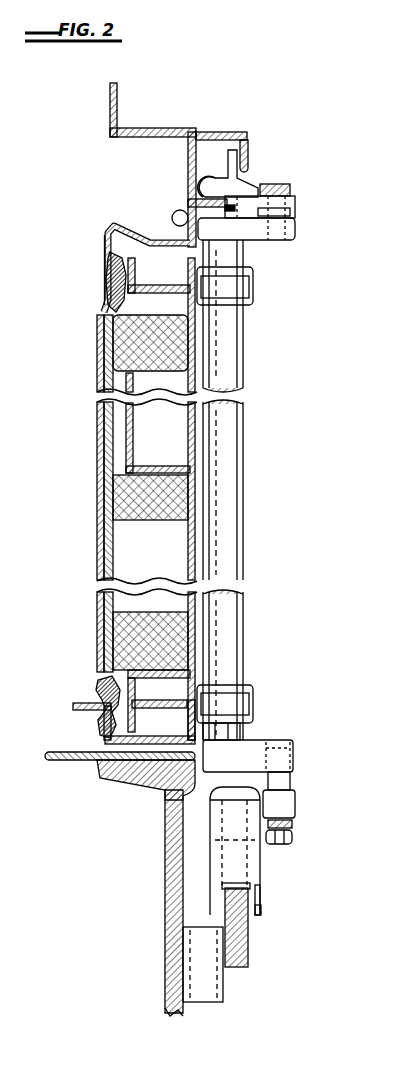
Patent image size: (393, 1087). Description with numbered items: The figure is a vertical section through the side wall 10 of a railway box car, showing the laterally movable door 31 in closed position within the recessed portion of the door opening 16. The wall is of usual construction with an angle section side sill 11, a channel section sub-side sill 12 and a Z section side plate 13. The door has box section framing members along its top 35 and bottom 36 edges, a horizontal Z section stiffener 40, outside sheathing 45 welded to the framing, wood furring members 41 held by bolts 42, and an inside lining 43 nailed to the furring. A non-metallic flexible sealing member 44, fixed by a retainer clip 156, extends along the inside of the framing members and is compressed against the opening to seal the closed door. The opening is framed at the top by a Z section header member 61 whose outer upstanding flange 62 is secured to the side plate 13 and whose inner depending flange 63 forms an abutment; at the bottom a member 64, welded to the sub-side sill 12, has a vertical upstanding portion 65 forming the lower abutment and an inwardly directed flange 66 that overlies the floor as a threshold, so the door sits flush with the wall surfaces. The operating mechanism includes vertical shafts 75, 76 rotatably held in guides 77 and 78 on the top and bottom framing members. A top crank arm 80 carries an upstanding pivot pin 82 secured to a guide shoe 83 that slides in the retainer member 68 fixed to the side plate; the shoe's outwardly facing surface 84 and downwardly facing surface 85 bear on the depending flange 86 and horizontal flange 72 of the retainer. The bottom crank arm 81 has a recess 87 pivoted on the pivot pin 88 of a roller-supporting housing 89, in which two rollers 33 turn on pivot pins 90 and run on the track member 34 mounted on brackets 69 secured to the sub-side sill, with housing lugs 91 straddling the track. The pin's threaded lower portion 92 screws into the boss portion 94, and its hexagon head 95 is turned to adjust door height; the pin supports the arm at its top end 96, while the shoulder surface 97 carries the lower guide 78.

The side wall 10 is at (106, 109).
The side sill 11 is at (86, 776).
The sub-side sill 12 is at (164, 912).
The side plate 13 is at (148, 126).
The door opening 16 is at (90, 506).
The laterally movable door 31 is at (198, 546).
The rollers 33 is at (262, 890).
The track member 34 is at (250, 955).
The top framing member 35 is at (172, 303).
The bottom framing member 36 is at (172, 690).
The horizontal stiffener member 40 is at (150, 465).
The wood furring members 41 is at (108, 378).
The bolts 42 is at (97, 361).
The inside lining 43 is at (97, 455).
The sealing member 44 is at (109, 292).
The outside sheathing 45 is at (196, 465).
The header member 61 is at (128, 212).
The outer upstanding flange 62 is at (160, 242).
The inner depending flange 63 is at (107, 275).
The bottom member 64 is at (152, 736).
The vertical upstanding portion 65 is at (105, 720).
The inwardly directed flange 66 is at (100, 697).
The retainer member 68 is at (222, 131).
The brackets 69 is at (225, 990).
The horizontal flange 72 is at (210, 186).
The operating shaft 75 is at (223, 490).
The operating shaft 76 is at (243, 560).
The top guide 77 is at (253, 290).
The bottom guide 78 is at (255, 703).
The top crank arm 80 is at (258, 241).
The bottom crank arm 81 is at (260, 746).
The pivot pin 82 is at (290, 215).
The door guide shoe 83 is at (247, 190).
The outwardly facing surface 84 is at (248, 159).
The downwardly facing surface 85 is at (232, 212).
The depending flange 86 is at (250, 168).
The recess 87 is at (298, 766).
The pivot pin 88 is at (291, 786).
The roller-supporting housing 89 is at (250, 882).
The pivot pins 90 is at (262, 868).
The housing lugs 91 is at (262, 905).
The threaded lower portion 92 is at (285, 831).
The boss portion 94 is at (296, 808).
The hexagon head 95 is at (293, 840).
The top end 96 is at (300, 748).
The shoulder surface 97 is at (232, 738).
The retainer clip 156 is at (136, 262).